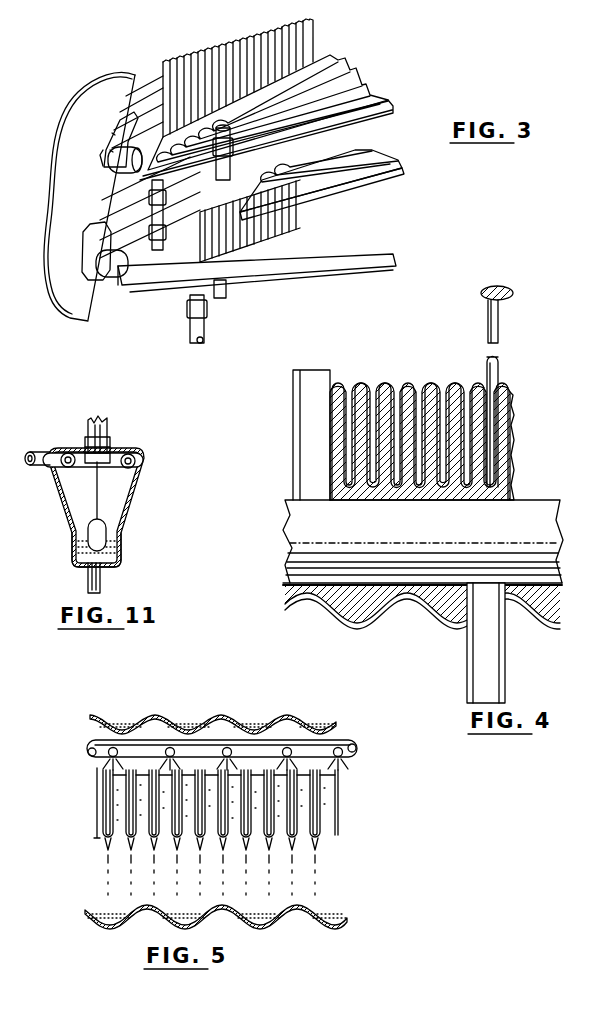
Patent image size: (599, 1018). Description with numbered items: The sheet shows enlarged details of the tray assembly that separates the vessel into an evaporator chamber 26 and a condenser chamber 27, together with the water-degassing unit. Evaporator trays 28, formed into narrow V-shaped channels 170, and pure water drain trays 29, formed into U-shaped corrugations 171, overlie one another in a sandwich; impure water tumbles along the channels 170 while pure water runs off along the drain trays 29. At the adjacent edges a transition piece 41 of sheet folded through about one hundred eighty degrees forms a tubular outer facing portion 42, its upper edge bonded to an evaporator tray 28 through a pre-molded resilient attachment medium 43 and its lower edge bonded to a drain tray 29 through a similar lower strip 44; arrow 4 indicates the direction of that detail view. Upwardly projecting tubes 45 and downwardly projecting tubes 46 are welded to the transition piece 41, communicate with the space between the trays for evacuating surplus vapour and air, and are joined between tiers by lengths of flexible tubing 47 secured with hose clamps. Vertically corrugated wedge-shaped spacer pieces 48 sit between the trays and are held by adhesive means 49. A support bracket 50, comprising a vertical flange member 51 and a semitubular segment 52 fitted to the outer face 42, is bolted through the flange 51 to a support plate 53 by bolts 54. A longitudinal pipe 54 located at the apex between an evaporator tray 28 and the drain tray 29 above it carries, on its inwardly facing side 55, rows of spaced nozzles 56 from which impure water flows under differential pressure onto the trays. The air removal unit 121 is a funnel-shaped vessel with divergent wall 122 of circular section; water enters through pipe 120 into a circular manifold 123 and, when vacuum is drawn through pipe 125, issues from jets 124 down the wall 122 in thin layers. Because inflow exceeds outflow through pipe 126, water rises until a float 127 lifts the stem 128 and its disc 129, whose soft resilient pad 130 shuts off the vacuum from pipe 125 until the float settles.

In FIG. 3, the arrow 4 is at (115, 327).
In FIG. 3, the evaporator chamber 26 is at (265, 303).
In FIG. 3, the condenser chamber 27 is at (367, 225).
In FIG. 3, the evaporator tray 28 is at (347, 92).
In FIG. 4, the evaporator tray 28 is at (512, 390).
In FIG. 5, the evaporator tray 28 is at (95, 815).
In FIG. 3, the pure water drain tray 29 is at (385, 153).
In FIG. 4, the pure water drain tray 29 is at (527, 608).
In FIG. 5, the pure water drain tray 29 is at (133, 712).
In FIG. 3, the transition piece 41 is at (173, 270).
In FIG. 4, the transition piece 41 is at (303, 547).
In FIG. 3, the outer facing portion 42 is at (218, 298).
In FIG. 4, the attachment medium 43 is at (408, 383).
In FIG. 4, the lower strip 44 is at (340, 607).
In FIG. 3, the upwardly projecting tube 45 is at (160, 260).
In FIG. 4, the upwardly projecting tube 45 is at (293, 441).
In FIG. 3, the downwardly projecting tube 46 is at (190, 303).
In FIG. 4, the downwardly projecting tube 46 is at (468, 647).
In FIG. 3, the flexible tubing 47 is at (150, 225).
In FIG. 3, the wedge shaped spacer piece 48 is at (308, 53).
In FIG. 4, the wedge shaped spacer piece 48 is at (499, 337).
In FIG. 4, the adhesive means 49 is at (512, 297).
In FIG. 3, the support bracket 50 is at (118, 127).
In FIG. 3, the vertical flange member 51 is at (110, 147).
In FIG. 3, the semitubular segment 52 is at (133, 152).
In FIG. 3, the support plate 53 is at (107, 83).
In FIG. 3, the bolt 54 is at (107, 155).
In FIG. 5, the inwardly facing side 55 is at (168, 748).
In FIG. 5, the nozzle 56 is at (352, 760).
In FIG. 11, the pipe 120 is at (32, 465).
In FIG. 11, the air removal unit 121 is at (133, 522).
In FIG. 11, the wall 122 is at (143, 492).
In FIG. 11, the pivot bar 123 is at (115, 457).
In FIG. 11, the jet 124 is at (135, 461).
In FIG. 11, the vacuum pipe 125 is at (107, 433).
In FIG. 11, the outlet pipe 126 is at (102, 582).
In FIG. 11, the float 127 is at (90, 533).
In FIG. 11, the stem 128 is at (95, 510).
In FIG. 11, the disc 129 is at (62, 455).
In FIG. 11, the resilient pad 130 is at (87, 457).
In FIG. 4, the V-shaped channel 170 is at (447, 457).
In FIG. 5, the V-shaped channel 170 is at (323, 820).
In FIG. 4, the corrugation 171 is at (445, 617).
In FIG. 5, the corrugation 171 is at (310, 722).